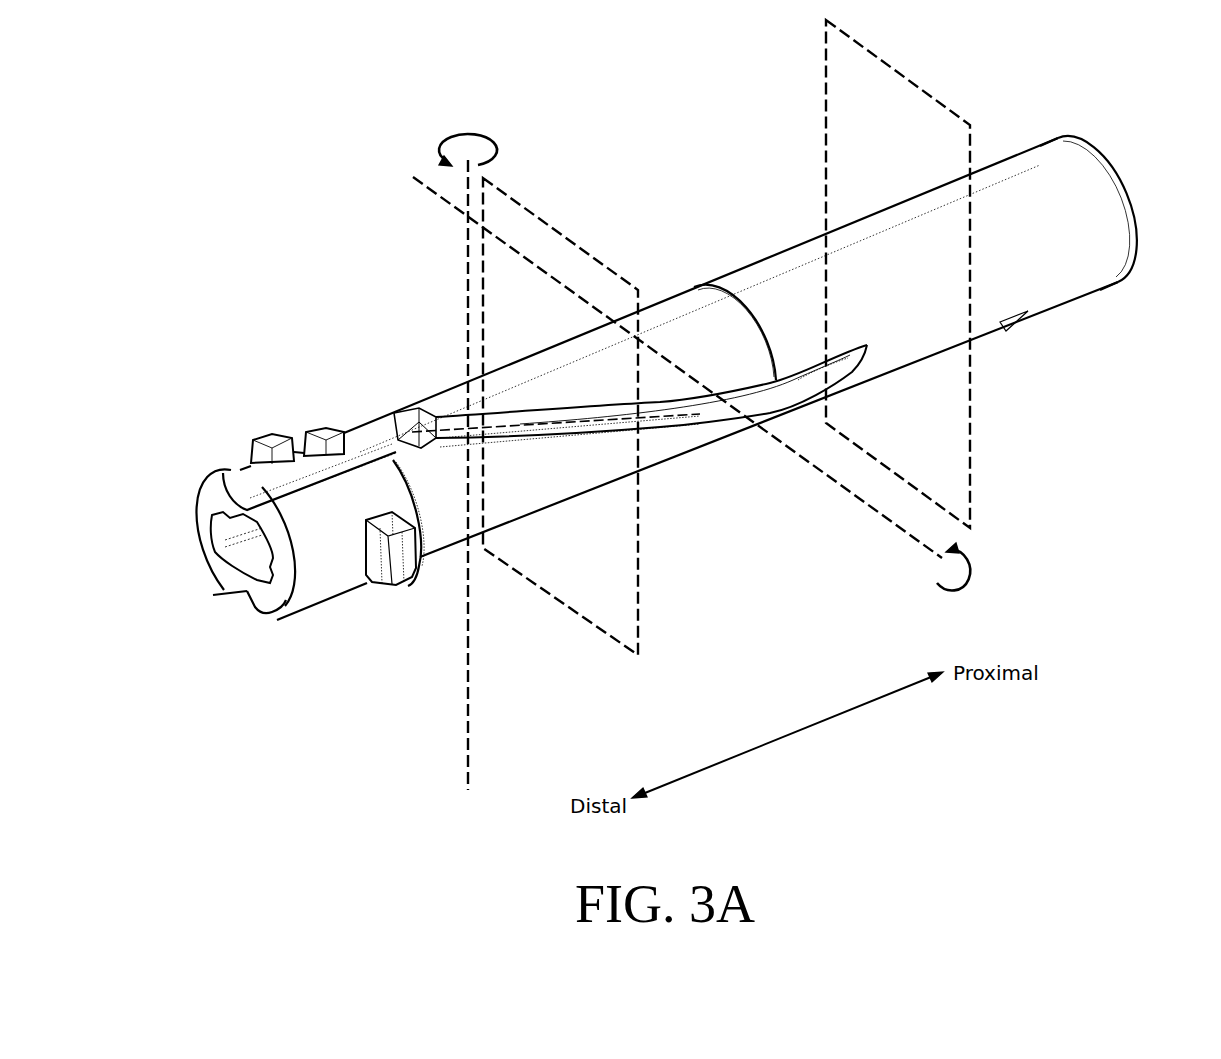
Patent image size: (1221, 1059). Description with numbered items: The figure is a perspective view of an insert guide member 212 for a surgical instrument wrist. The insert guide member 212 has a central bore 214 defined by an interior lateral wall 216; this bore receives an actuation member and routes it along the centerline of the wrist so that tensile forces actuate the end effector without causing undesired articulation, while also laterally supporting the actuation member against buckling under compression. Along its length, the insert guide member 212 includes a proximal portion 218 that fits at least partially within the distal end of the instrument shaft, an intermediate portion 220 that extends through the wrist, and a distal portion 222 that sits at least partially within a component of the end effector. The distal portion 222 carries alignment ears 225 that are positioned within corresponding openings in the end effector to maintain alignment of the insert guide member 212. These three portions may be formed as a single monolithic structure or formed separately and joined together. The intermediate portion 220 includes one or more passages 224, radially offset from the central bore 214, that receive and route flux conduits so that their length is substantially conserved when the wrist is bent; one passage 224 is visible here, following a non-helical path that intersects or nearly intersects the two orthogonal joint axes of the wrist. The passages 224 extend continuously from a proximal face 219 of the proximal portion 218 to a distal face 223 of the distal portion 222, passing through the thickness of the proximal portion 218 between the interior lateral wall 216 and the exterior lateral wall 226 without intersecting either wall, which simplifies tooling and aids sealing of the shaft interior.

The insert guide member 212 is at (665, 326).
The central bore 214 is at (236, 537).
The interior lateral wall 216 is at (245, 563).
The proximal portion 218 is at (1072, 257).
The proximal face 219 is at (1133, 187).
The intermediate portion 220 is at (548, 478).
The distal portion 222 is at (332, 565).
The distal face 223 is at (250, 620).
The passage 224 is at (665, 424).
The alignment ear 225 is at (413, 563).
The exterior lateral wall 226 is at (677, 312).